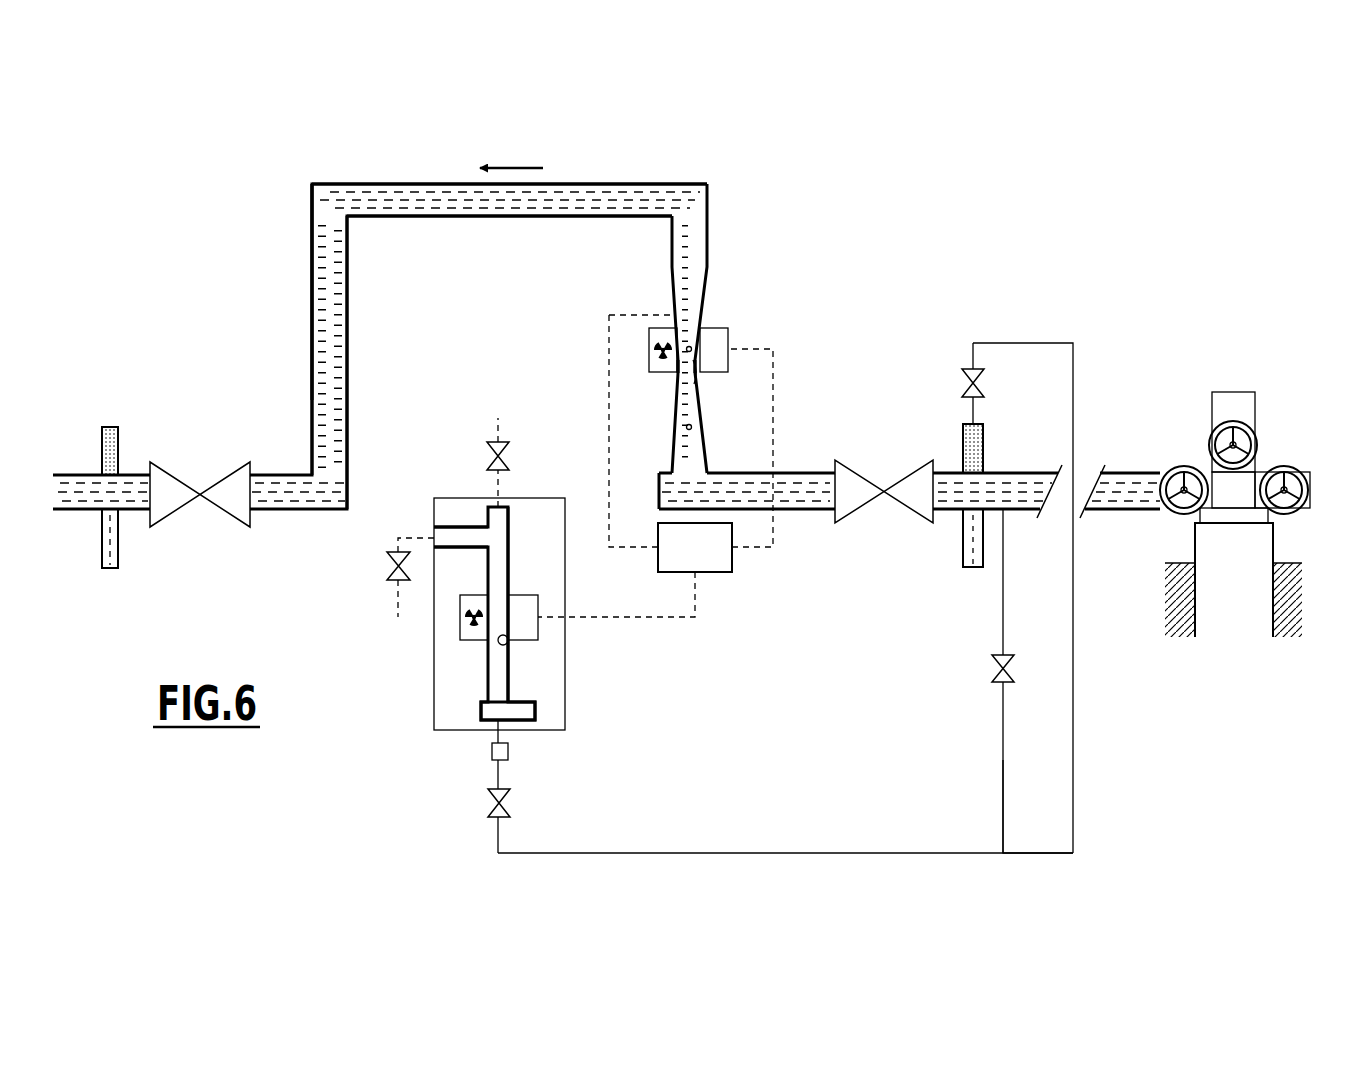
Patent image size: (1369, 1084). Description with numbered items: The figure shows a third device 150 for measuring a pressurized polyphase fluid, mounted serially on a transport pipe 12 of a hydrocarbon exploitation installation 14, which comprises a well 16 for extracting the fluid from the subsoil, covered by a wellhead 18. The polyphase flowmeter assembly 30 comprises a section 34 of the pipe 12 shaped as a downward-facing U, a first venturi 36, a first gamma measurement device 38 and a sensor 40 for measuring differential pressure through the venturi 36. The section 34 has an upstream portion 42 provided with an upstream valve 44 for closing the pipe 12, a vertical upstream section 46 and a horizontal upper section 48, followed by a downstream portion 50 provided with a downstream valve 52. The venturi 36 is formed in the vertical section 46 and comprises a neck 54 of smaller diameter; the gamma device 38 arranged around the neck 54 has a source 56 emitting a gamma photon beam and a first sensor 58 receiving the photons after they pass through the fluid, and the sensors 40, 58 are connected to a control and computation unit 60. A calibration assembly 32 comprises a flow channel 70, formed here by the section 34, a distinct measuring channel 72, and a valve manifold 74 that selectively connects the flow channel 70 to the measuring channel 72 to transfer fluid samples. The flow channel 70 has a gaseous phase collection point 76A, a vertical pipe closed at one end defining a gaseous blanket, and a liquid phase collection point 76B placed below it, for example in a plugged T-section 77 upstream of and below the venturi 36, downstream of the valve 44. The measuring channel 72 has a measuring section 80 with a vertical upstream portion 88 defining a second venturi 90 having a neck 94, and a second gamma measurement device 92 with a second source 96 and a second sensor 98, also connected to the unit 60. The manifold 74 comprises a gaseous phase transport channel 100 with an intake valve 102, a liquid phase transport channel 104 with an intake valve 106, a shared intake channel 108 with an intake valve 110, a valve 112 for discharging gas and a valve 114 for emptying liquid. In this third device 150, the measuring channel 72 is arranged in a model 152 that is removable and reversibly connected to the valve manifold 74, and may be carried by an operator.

The transport pipe 12 is at (1134, 465).
The hydrocarbon exploitation installation 14 is at (1250, 372).
The well 16 is at (1262, 598).
The wellhead 18 is at (1312, 478).
The polyphase flowmeter assembly 30 is at (627, 168).
The calibration assembly 32 is at (360, 628).
The section of the pipe 34 is at (305, 252).
The flow channel 70 is at (272, 292).
The first venturi 36 is at (667, 302).
The first gamma measurement device 38 is at (645, 338).
The differential pressure sensor 40 is at (712, 300).
The upstream portion 42 is at (945, 510).
The upstream valve 44 is at (912, 478).
The vertical upstream section 46 is at (672, 240).
The horizontal upper section 48 is at (372, 183).
The downstream portion 50 is at (310, 318).
The downstream valve 52 is at (192, 472).
The neck 54 is at (698, 380).
The source 56 is at (658, 372).
The first sensor 58 is at (714, 365).
The control and computation unit 60 is at (635, 570).
The measuring channel 72 is at (465, 706).
The valve manifold 74 is at (1052, 867).
The gaseous phase collection point 76A is at (986, 440).
The liquid phase collection point 76B is at (1003, 512).
The plugged T-section 77 is at (657, 490).
The measuring section 80 is at (512, 672).
The vertical upstream portion 88 is at (512, 528).
The second venturi 90 is at (510, 570).
The second gamma measurement device 92 is at (465, 645).
The neck 94 is at (510, 645).
The second source 96 is at (458, 630).
The second sensor 98 is at (540, 630).
The gaseous phase transport channel 100 is at (1030, 343).
The gaseous phase intake valve 102 is at (961, 383).
The liquid phase transport channel 104 is at (1003, 757).
The liquid phase intake valve 106 is at (995, 657).
The shared intake channel 108 is at (810, 855).
The intake valve 110 is at (507, 800).
The gas discharge valve 112 is at (506, 440).
The liquid emptying valve 114 is at (392, 550).
The third device 150 is at (225, 178).
The model 152 is at (465, 498).